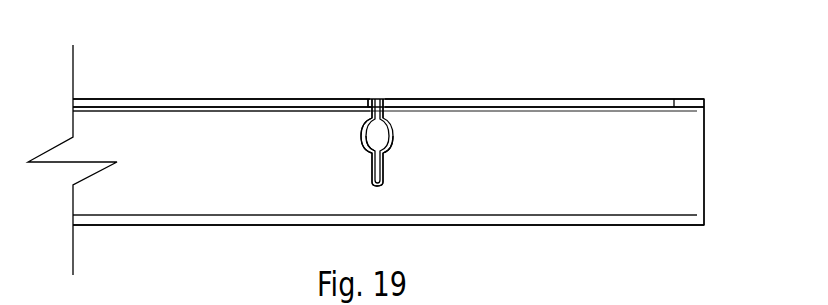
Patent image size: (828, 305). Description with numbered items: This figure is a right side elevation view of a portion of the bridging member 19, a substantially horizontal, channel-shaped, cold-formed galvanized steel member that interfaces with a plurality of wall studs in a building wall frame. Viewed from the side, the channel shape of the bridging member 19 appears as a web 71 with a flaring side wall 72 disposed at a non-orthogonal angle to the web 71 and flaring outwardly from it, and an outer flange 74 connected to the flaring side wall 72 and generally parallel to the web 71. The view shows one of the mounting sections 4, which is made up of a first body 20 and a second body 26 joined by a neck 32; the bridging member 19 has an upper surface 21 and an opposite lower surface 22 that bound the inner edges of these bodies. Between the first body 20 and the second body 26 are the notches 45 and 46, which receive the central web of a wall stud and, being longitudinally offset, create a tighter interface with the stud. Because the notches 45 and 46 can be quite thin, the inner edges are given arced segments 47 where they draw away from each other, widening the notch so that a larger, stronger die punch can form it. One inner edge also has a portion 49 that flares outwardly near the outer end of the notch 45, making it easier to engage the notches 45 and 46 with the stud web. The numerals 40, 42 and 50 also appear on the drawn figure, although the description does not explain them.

The mounting section 4 is at (403, 98).
The bridging member 19 is at (523, 97).
The first body 20 is at (362, 117).
The upper surface 21 is at (148, 122).
The lower surface 22 is at (257, 97).
The second body 26 is at (402, 122).
The neck 32 is at (376, 205).
The top layer 40 is at (84, 120).
The clip neck 42 is at (365, 130).
The notch 45 is at (383, 178).
The notch 46 is at (362, 137).
The arced segment 47 is at (391, 137).
The flaring portion 49 is at (367, 95).
The frame member 50 is at (704, 133).
The web 71 is at (635, 225).
The flaring side wall 72 is at (690, 178).
The outer flange 74 is at (618, 98).